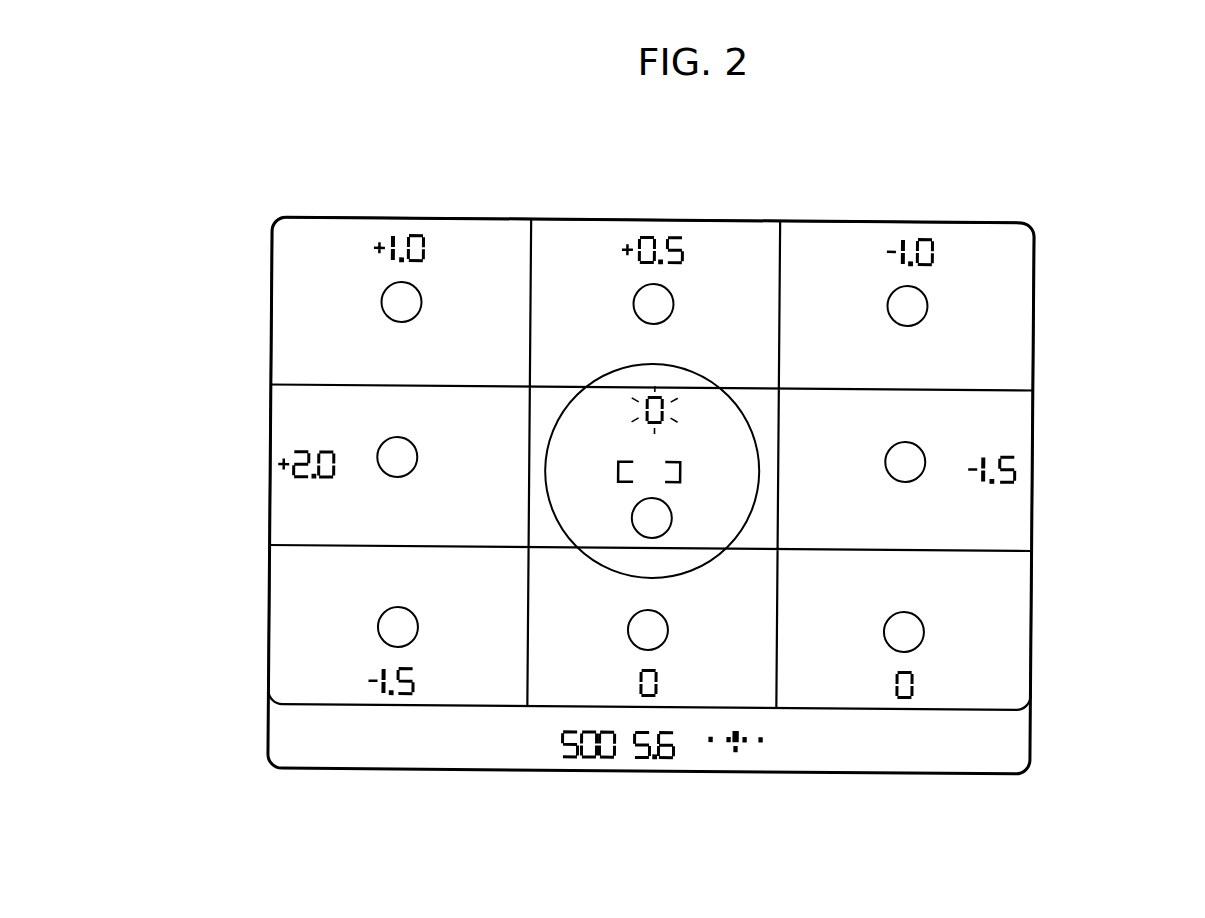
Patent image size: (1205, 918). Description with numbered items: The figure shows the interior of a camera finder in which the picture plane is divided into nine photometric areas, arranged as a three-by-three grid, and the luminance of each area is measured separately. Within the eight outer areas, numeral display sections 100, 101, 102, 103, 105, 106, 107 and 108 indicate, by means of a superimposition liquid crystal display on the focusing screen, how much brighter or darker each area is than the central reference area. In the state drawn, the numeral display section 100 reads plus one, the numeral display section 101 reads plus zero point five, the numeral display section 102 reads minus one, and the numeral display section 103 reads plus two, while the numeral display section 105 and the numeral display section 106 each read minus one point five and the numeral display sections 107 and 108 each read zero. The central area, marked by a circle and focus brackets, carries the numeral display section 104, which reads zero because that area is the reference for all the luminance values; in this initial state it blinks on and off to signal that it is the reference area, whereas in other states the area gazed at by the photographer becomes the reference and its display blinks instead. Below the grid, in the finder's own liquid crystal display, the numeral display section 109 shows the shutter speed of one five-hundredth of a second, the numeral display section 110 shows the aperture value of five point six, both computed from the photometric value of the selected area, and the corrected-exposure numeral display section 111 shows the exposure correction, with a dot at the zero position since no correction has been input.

The numeral display section 100 is at (455, 232).
The numeral display section 101 is at (710, 235).
The numeral display section 102 is at (980, 235).
The numeral display section 103 is at (285, 428).
The numeral display section 104 is at (705, 405).
The numeral display section 105 is at (1013, 427).
The numeral display section 106 is at (285, 628).
The numeral display section 107 is at (745, 600).
The numeral display section 108 is at (1012, 674).
The numeral display section 109 is at (586, 782).
The numeral display section 110 is at (651, 782).
The corrected-exposure numeral display section 111 is at (736, 782).